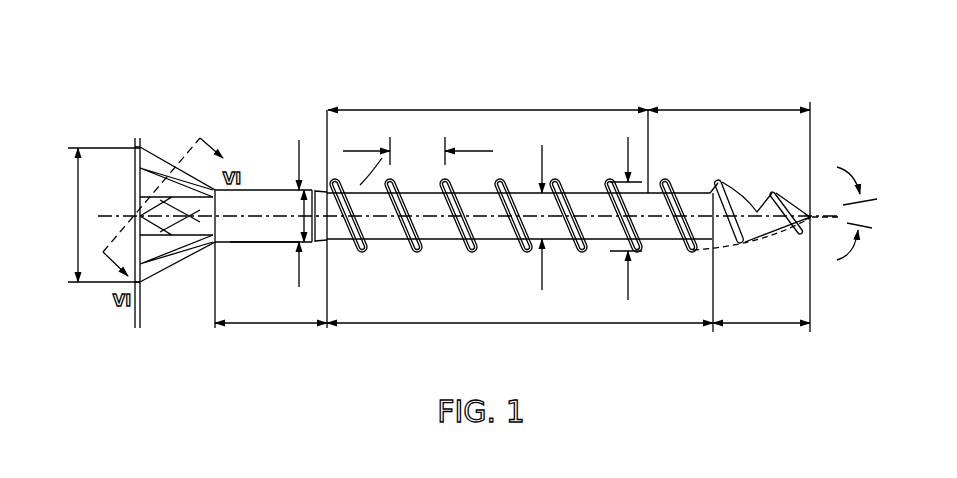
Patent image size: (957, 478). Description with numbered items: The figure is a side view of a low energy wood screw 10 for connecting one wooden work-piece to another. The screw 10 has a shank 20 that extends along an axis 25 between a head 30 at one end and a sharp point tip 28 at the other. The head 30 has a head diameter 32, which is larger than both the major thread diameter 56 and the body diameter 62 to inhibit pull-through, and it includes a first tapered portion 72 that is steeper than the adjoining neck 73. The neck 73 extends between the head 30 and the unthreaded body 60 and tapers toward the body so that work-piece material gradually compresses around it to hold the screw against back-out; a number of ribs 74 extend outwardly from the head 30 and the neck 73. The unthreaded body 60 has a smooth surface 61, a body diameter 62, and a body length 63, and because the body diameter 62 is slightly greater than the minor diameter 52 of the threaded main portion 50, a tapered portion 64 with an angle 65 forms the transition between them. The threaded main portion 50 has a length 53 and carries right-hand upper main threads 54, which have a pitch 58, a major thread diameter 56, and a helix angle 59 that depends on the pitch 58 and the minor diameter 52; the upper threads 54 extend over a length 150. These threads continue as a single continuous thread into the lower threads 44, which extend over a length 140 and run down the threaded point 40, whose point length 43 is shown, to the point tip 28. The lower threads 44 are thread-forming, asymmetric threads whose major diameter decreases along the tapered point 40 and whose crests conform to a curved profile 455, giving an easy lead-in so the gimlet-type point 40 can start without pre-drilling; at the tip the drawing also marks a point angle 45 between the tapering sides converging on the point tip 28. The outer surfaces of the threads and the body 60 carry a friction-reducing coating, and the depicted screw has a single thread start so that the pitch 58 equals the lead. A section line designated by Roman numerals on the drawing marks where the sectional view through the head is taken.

The screw 10 is at (368, 52).
The head 30 is at (143, 146).
The head diameter 32 is at (78, 215).
The ribs 74 is at (162, 150).
The first tapered portion 72 is at (150, 268).
The neck 73 is at (198, 226).
The unthreaded body 60 is at (275, 190).
The smooth surface 61 is at (261, 240).
The body diameter 62 is at (299, 150).
The angle of the tapered portion 65 is at (303, 217).
The tapered portion 64 is at (320, 234).
The body length 63 is at (280, 324).
The helix angle 59 is at (363, 173).
The threaded main portion 50 is at (492, 239).
The upper main threads 54 is at (612, 181).
The pitch 58 is at (477, 150).
The minor diameter 52 is at (542, 152).
The shank 20 is at (556, 242).
The major thread diameter 56 is at (628, 140).
The length of upper threads 150 is at (505, 110).
The length of main threaded portion 53 is at (555, 324).
The length of lower threads 140 is at (738, 110).
The point length 43 is at (765, 324).
The threaded point 40 is at (758, 210).
The lower threads 44 is at (665, 185).
The curved profile 455 is at (768, 237).
The point tip 28 is at (812, 217).
The axis 25 is at (827, 222).
The tip angle 45 is at (837, 260).